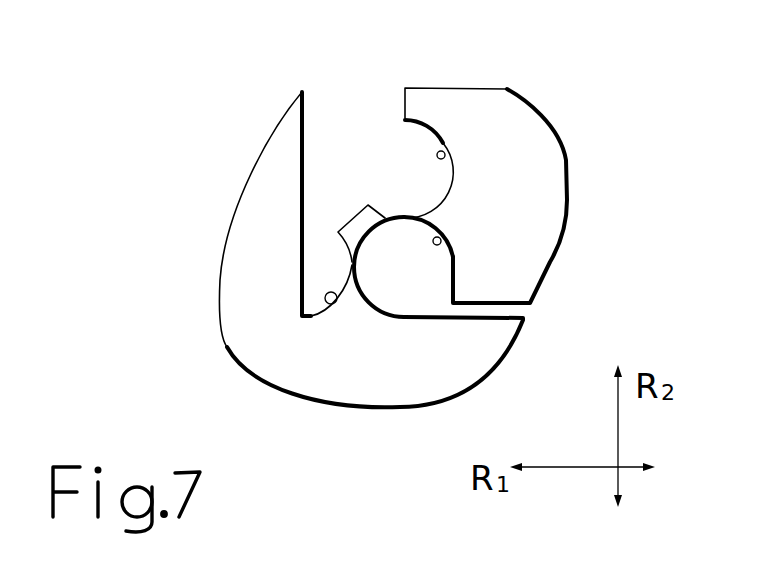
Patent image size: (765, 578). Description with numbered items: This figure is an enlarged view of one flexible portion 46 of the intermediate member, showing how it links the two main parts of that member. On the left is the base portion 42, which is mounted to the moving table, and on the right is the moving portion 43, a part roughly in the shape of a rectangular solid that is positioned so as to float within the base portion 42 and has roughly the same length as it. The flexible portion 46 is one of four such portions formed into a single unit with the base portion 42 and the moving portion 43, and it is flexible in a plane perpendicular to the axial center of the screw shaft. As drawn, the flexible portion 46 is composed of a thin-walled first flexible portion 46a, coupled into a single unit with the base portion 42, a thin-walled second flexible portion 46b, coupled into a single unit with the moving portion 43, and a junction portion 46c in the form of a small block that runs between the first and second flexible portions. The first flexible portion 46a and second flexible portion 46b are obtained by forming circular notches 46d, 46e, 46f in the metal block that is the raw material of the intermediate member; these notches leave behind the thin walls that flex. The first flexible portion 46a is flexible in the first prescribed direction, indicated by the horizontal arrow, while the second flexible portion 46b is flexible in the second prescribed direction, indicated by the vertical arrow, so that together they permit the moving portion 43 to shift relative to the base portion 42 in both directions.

The base portion 42 is at (328, 377).
The moving portion 43 is at (552, 166).
The flexible portion 46 is at (402, 249).
The first flexible portion 46a is at (356, 267).
The second flexible portion 46b is at (403, 213).
The junction portion 46c is at (360, 223).
The circular notch 46d is at (334, 304).
The circular notch 46e is at (436, 244).
The circular notch 46f is at (440, 151).